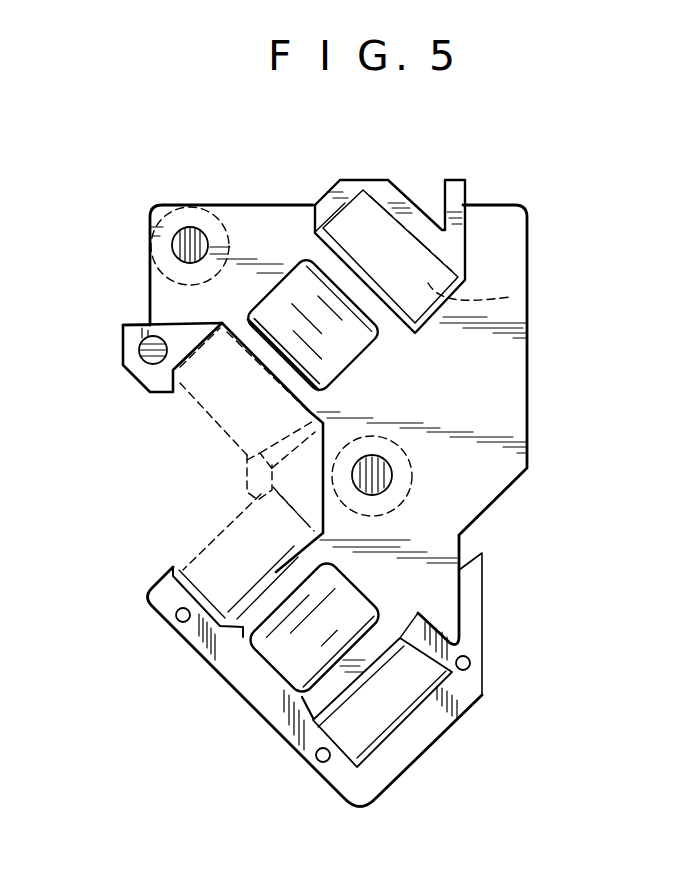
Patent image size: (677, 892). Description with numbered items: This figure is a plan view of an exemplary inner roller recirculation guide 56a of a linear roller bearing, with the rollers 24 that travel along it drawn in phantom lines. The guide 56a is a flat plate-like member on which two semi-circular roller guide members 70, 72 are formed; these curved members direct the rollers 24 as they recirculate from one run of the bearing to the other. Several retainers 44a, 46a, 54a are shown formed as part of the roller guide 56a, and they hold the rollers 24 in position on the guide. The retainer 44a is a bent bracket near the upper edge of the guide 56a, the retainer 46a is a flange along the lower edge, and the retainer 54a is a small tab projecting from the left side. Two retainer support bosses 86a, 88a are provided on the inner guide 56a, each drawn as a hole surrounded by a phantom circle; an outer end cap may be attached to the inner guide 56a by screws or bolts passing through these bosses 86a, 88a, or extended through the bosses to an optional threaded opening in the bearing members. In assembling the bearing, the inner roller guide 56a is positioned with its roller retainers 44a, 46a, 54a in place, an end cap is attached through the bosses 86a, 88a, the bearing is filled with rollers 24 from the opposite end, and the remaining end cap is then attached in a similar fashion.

The rollers 24 is at (510, 297).
The retainer 44a is at (392, 202).
The retainer 46a is at (397, 778).
The retainer 54a is at (160, 382).
The roller recirculation guide 56a is at (452, 383).
The semi-circular roller guide member 70 is at (290, 283).
The semi-circular roller guide member 72 is at (293, 665).
The retainer support boss 86a is at (413, 455).
The retainer support boss 88a is at (240, 152).